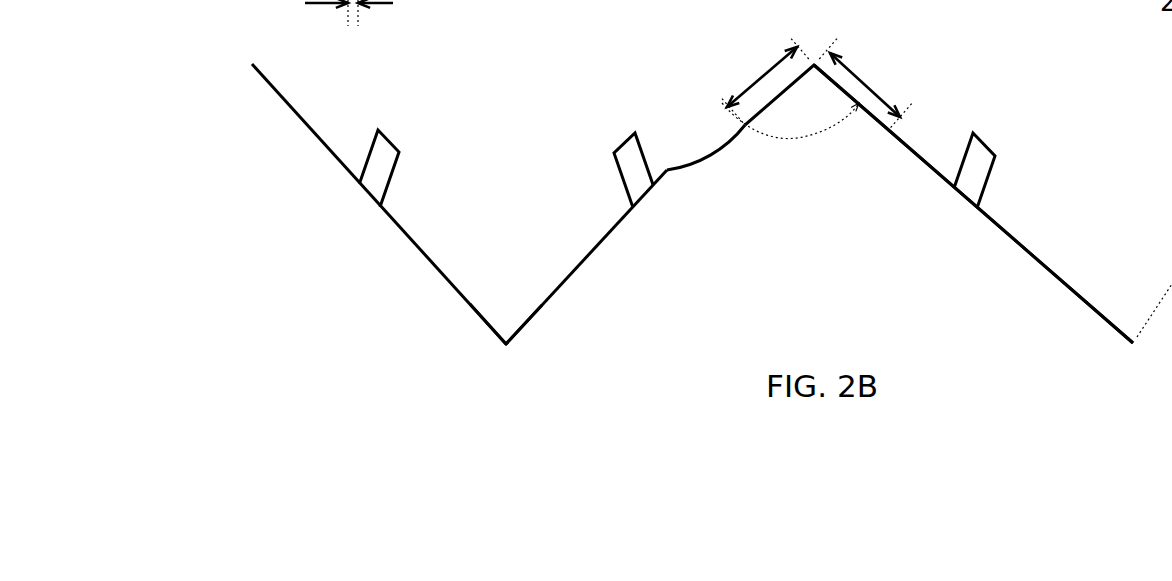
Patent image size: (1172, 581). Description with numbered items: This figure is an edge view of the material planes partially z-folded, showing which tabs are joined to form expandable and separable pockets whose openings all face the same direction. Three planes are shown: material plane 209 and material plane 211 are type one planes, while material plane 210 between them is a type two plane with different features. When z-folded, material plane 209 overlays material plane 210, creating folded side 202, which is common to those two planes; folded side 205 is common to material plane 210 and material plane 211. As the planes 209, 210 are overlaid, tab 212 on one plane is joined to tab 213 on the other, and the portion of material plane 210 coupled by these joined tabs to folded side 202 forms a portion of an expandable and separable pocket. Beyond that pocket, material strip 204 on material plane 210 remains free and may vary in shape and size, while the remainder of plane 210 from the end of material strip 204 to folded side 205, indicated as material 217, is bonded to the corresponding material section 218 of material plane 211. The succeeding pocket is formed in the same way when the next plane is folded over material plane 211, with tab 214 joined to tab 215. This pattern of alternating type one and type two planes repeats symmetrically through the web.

The folded edge 202 is at (505, 333).
The material strip 204 is at (732, 153).
The folded edge 205 is at (814, 65).
The material plane 209 is at (307, 135).
The material plane 210 is at (577, 273).
The material plane 211 is at (1073, 290).
The tab 212 is at (387, 152).
The tab 213 is at (633, 134).
The tab 214 is at (980, 157).
The tab 215 is at (553, 7).
The material 217 is at (755, 73).
The material section 218 is at (867, 80).